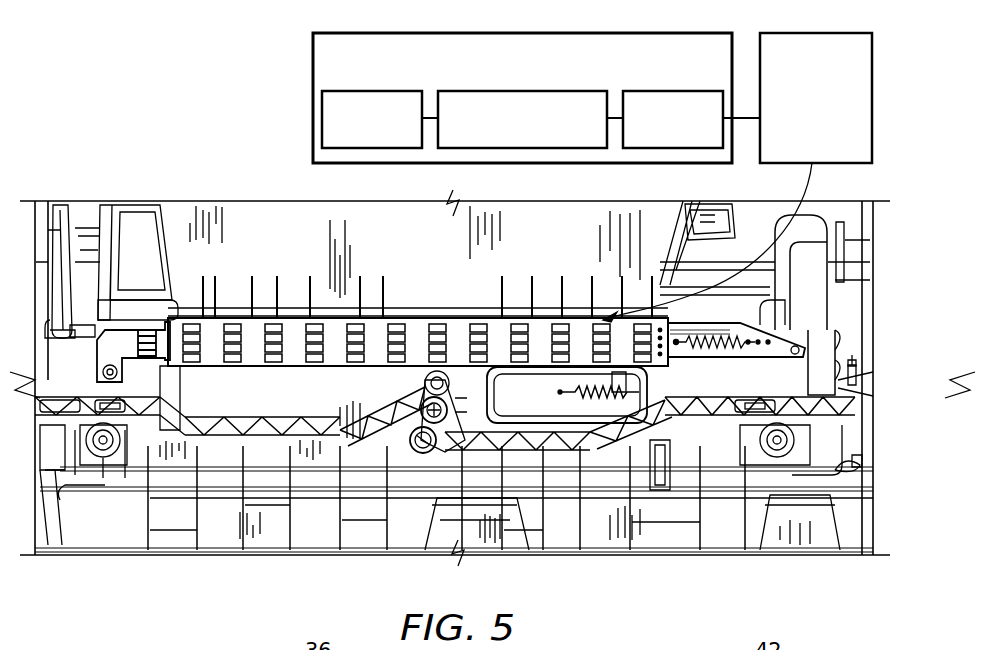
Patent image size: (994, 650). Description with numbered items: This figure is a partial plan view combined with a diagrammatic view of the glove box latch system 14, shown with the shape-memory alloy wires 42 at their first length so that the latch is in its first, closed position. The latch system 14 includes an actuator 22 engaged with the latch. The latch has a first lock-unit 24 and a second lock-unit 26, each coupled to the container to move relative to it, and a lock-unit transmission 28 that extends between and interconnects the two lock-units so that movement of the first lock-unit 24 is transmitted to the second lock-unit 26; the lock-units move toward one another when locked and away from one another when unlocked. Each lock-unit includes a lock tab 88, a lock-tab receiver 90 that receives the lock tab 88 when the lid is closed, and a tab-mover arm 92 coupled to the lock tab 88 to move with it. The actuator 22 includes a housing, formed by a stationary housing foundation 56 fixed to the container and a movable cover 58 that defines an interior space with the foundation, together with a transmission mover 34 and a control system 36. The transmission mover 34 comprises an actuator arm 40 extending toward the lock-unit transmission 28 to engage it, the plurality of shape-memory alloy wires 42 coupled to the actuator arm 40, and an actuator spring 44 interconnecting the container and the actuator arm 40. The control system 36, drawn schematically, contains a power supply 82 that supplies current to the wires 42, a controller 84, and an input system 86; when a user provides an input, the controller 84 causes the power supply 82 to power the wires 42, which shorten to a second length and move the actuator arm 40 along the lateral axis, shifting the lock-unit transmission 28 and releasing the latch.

The latch system 14 is at (120, 104).
The actuator 22 is at (258, 248).
The first lock-unit 24 is at (135, 450).
The second lock-unit 26 is at (710, 435).
The lock-unit transmission 28 is at (420, 457).
The transmission mover 34 is at (493, 273).
The control system 36 is at (366, 33).
The actuator arm 40 is at (498, 380).
The shape-memory alloy wires 42 is at (812, 33).
The actuator spring 44 is at (735, 341).
The stationary housing foundation 56 is at (143, 313).
The movable cover 58 is at (383, 318).
The power supply 82 is at (675, 91).
The controller 84 is at (490, 91).
The input system 86 is at (372, 91).
The lock tab 88 is at (855, 378).
The lock-tab receiver 90 is at (850, 364).
The tab-mover arm 92 is at (570, 447).